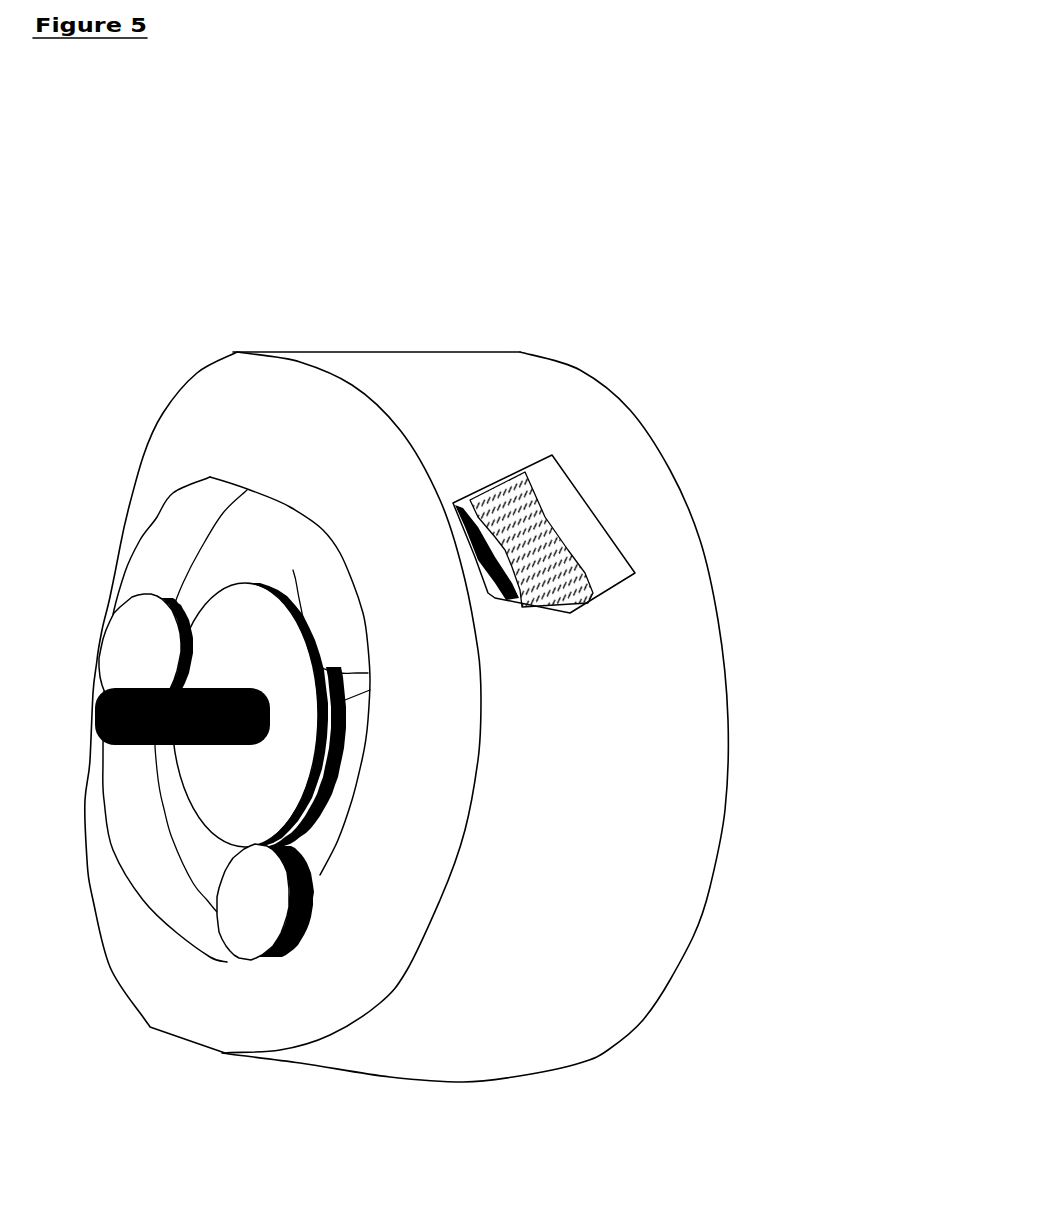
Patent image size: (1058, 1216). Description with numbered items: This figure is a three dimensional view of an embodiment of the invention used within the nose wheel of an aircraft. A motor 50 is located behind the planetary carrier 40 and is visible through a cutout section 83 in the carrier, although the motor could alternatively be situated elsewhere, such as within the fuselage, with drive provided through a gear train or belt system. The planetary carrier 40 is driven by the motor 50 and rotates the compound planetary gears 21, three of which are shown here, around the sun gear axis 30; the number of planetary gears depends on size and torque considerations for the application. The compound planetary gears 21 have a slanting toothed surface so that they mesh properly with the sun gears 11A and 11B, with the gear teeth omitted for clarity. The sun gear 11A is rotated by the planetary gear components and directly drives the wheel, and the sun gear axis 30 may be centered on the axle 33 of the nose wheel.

The sun gear 11A is at (483, 701).
The sun gear 11B is at (290, 727).
The compound planetary gear 21 is at (388, 653).
The sun gear axis 30 is at (293, 481).
The axle 33 is at (293, 481).
The planetary carrier 40 is at (510, 717).
The motor 50 is at (507, 502).
The cutout section 83 is at (578, 503).